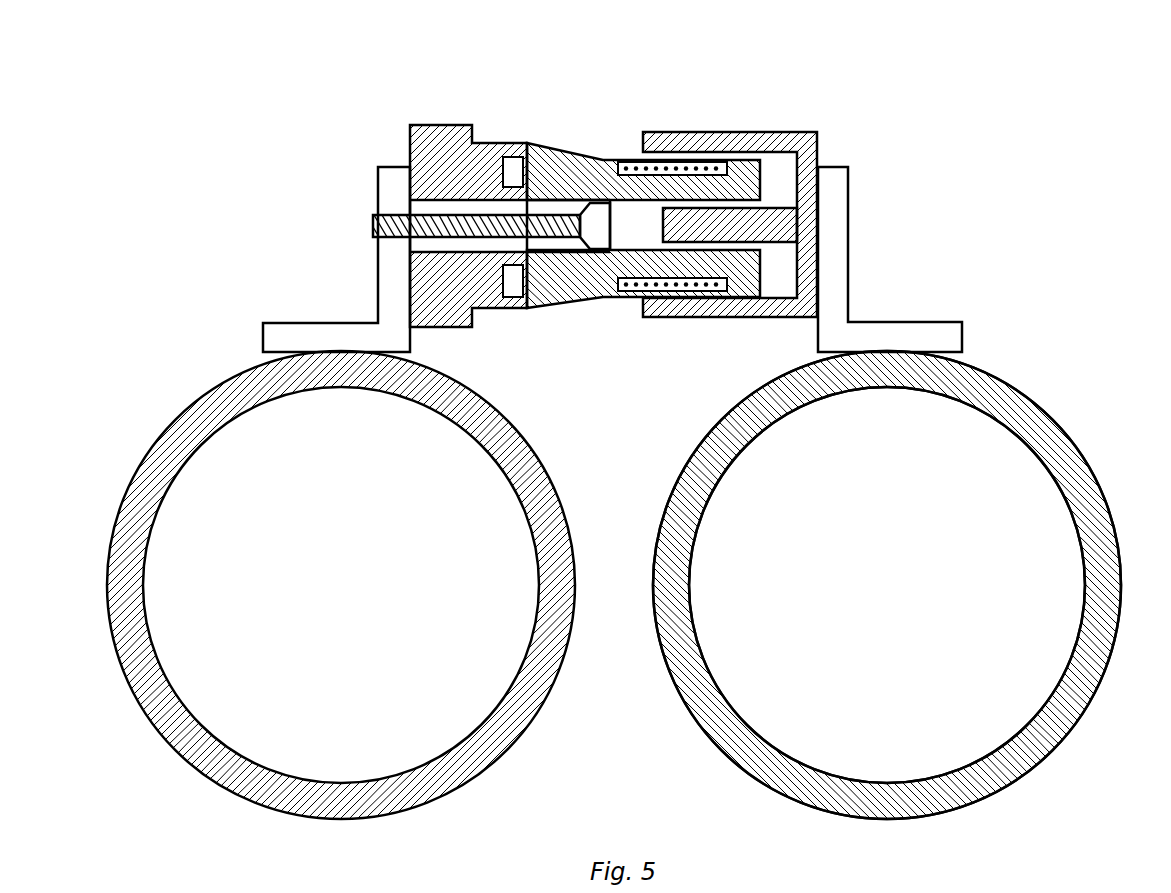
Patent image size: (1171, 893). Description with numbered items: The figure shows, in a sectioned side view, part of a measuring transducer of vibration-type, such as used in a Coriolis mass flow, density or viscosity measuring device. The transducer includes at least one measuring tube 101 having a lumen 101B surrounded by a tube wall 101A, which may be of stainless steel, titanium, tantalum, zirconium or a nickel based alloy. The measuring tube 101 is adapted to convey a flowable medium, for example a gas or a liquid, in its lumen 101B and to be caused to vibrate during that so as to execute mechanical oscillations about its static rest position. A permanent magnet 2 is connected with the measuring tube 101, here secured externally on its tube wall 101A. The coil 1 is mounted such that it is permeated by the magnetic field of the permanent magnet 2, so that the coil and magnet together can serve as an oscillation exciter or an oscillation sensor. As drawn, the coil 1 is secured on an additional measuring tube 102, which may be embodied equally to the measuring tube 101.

The coil 1 is at (595, 135).
The permanent magnet 2 is at (778, 117).
The measuring tube 101 is at (858, 607).
The tube wall 101A is at (997, 400).
The lumen 101B is at (968, 738).
The additional measuring tube 102 is at (312, 607).